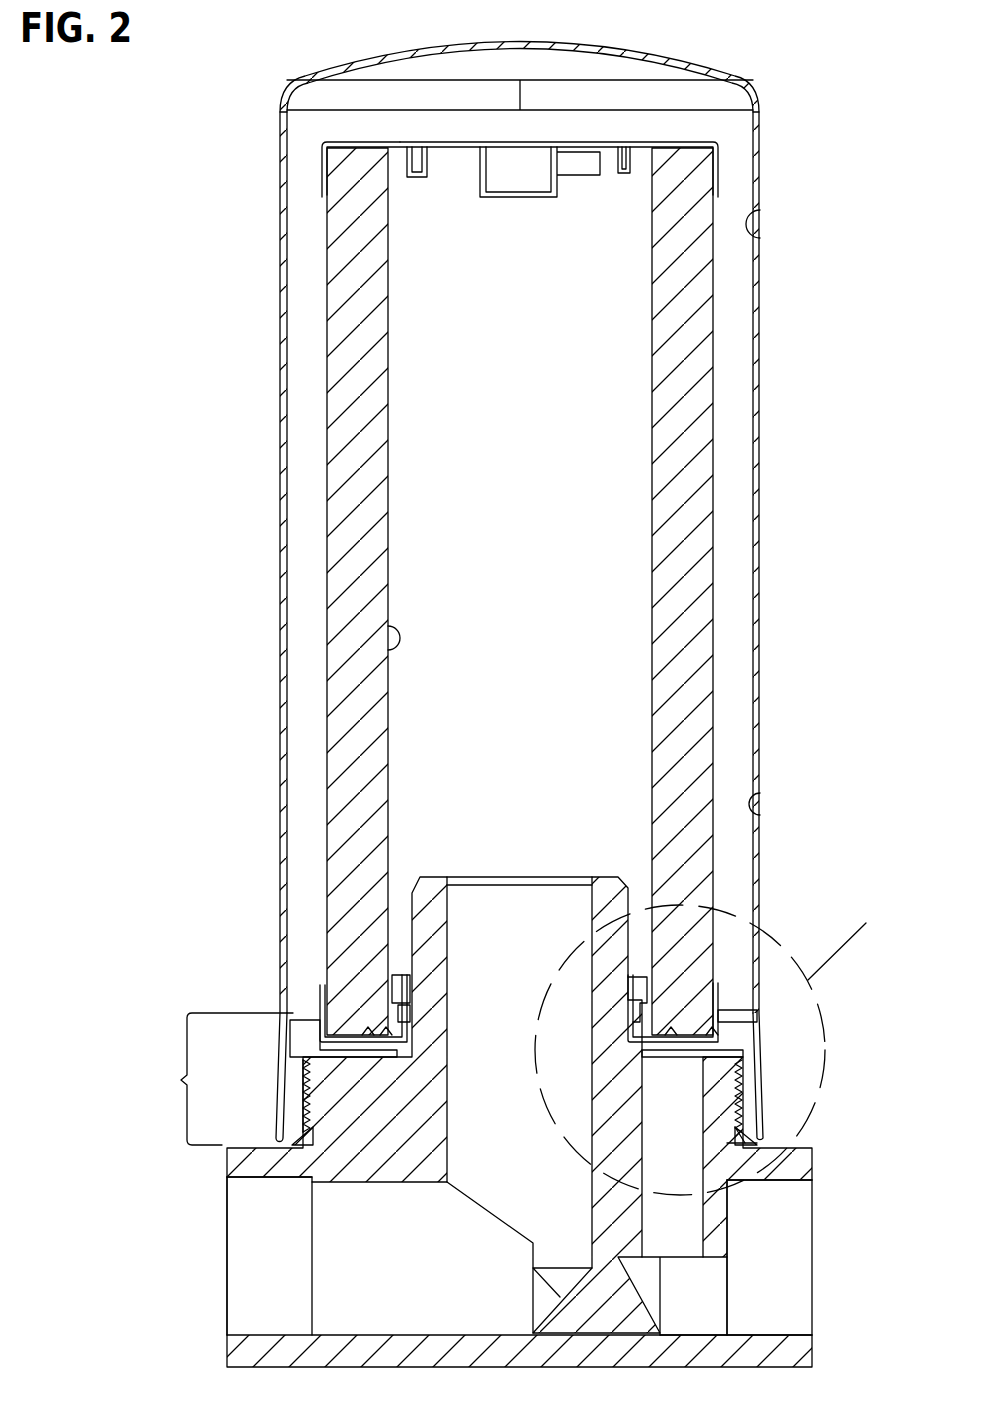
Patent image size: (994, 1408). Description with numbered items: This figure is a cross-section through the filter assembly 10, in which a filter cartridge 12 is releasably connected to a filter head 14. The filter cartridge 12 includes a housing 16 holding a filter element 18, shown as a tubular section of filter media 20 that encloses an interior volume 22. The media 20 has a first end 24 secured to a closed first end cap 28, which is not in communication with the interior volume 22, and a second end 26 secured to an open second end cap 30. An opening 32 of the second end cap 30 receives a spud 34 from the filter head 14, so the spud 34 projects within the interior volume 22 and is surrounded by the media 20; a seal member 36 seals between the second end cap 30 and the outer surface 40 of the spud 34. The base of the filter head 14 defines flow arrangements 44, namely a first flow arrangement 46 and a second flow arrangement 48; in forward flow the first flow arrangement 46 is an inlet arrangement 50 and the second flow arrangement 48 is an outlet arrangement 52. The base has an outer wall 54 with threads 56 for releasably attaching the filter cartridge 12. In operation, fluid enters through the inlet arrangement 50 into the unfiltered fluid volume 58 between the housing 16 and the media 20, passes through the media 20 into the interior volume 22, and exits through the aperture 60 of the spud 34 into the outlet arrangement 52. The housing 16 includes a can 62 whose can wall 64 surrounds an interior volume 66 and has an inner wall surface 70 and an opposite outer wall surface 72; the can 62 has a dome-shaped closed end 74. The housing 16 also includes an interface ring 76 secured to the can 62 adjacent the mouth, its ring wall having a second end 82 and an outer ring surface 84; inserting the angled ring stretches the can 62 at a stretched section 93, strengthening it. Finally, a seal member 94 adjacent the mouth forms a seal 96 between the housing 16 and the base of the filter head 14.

The filter assembly 10 is at (823, 96).
The filter cartridge 12 is at (249, 378).
The filter head 14 is at (186, 1167).
The housing 16 is at (760, 384).
The filter element 18 is at (321, 543).
The filter media 20 is at (710, 686).
The interior volume 22 is at (388, 626).
The first end 24 is at (347, 147).
The second end 26 is at (345, 1036).
The first end cap 28 is at (353, 142).
The second end cap 30 is at (330, 1051).
The opening 32 is at (405, 968).
The spud 34 is at (444, 928).
The seal member 36 is at (410, 1012).
The outer surface 40 is at (633, 960).
The flow arrangements 44 is at (211, 1256).
The first flow arrangement 46 is at (798, 1336).
The second flow arrangement 48 is at (236, 1337).
The inlet arrangement 50 is at (806, 1175).
The outlet arrangement 52 is at (238, 1178).
The outer wall 54 is at (300, 1082).
The threads 56 is at (298, 1098).
The unfiltered fluid volume 58 is at (754, 604).
The aperture 60 is at (592, 912).
The can 62 is at (281, 462).
The can wall 64 is at (281, 503).
The interior volume 66 is at (760, 238).
The inner wall surface 70 is at (760, 758).
The outer wall surface 72 is at (760, 815).
The closed end 74 is at (596, 46).
The interface ring 76 is at (748, 1075).
The second end 82 is at (742, 1012).
The outer ring surface 84 is at (760, 1106).
The stretched section 93 is at (215, 1079).
The seal member 94 is at (740, 1137).
The seal 96 is at (733, 1145).